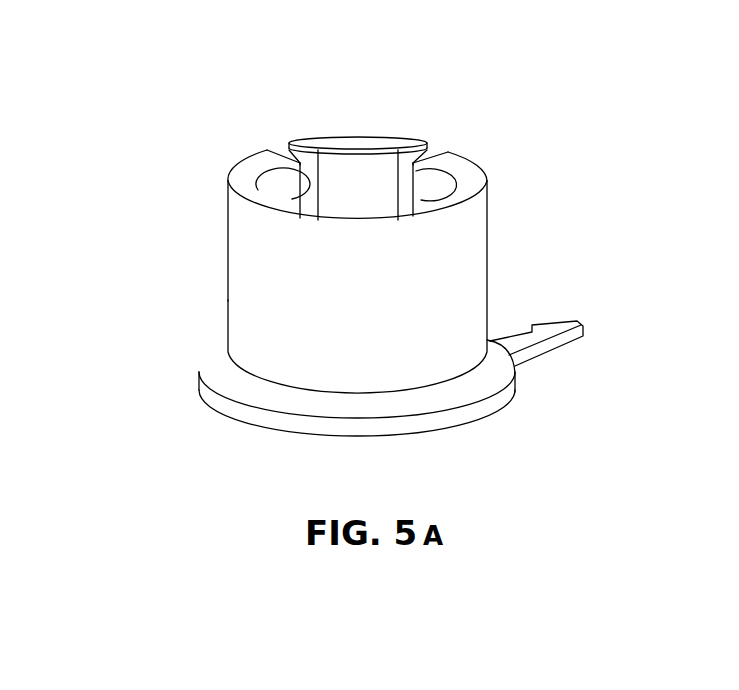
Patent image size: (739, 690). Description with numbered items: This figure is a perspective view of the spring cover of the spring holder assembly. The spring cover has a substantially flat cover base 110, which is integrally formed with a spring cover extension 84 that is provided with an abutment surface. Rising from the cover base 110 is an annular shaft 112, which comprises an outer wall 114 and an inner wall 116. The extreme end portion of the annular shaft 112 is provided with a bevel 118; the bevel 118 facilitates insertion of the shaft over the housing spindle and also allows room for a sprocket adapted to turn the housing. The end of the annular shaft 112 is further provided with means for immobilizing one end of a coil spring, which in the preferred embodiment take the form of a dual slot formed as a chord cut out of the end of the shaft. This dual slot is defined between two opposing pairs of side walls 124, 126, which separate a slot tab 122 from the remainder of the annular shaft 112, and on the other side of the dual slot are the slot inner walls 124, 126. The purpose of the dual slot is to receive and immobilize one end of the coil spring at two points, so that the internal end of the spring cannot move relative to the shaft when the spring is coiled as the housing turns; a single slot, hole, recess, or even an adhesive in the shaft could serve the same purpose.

The spring cover extension 84 is at (556, 328).
The cover base 110 is at (503, 393).
The annular shaft 112 is at (186, 249).
The outer wall 114 is at (243, 311).
The inner wall 116 is at (282, 170).
The bevel 118 is at (470, 172).
The slot tab 122 is at (374, 133).
The slot inner walls 124 is at (278, 148).
The slot inner walls 126 is at (422, 150).